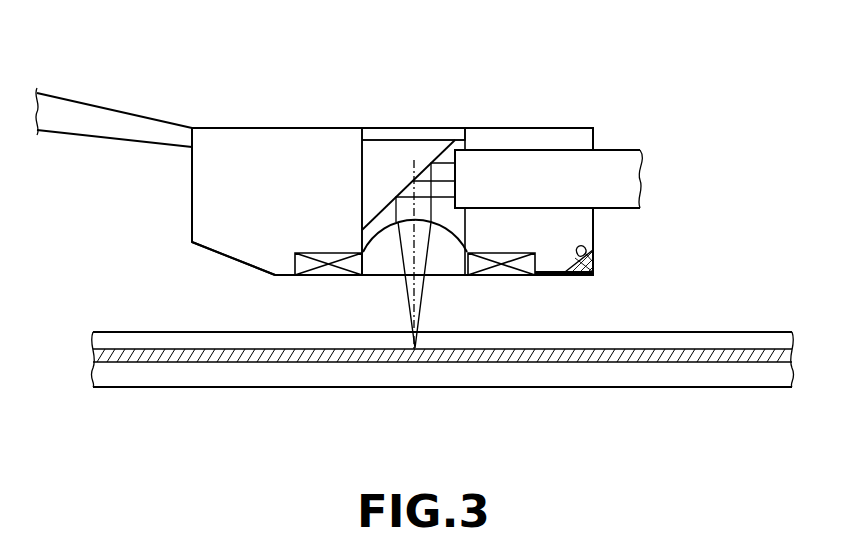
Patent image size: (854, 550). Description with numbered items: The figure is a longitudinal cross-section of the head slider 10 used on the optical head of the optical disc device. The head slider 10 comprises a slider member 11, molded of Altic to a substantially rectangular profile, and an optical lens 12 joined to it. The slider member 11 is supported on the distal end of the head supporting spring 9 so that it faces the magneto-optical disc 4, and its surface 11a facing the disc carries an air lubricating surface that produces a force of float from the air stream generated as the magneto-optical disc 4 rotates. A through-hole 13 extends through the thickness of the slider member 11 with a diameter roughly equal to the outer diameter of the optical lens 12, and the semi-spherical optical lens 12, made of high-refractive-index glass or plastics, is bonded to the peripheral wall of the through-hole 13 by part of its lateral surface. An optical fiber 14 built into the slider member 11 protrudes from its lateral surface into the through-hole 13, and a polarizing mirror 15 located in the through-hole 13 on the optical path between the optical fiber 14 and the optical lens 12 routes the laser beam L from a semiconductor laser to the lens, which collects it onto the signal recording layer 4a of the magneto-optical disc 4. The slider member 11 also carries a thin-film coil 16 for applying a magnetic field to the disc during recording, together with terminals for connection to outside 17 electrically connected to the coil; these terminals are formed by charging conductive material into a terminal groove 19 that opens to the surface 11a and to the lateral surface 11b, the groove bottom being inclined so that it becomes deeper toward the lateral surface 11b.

The head slider 10 is at (272, 31).
The head supporting spring 9 is at (110, 123).
The slider member 11 is at (288, 147).
The surface facing the magneto-optical disc 11a is at (213, 237).
The lateral surface 11b is at (595, 232).
The optical lens 12 is at (380, 267).
The through-hole 13 is at (450, 133).
The optical fiber 14 is at (622, 160).
The polarizing mirror 15 is at (393, 137).
The thin-film coil 16 is at (497, 270).
The terminals for connection to outside 17 is at (595, 273).
The terminal groove 19 is at (593, 255).
The magneto-optical disc 4 is at (755, 343).
The signal recording layer 4a is at (720, 362).
The laser beam L is at (423, 310).